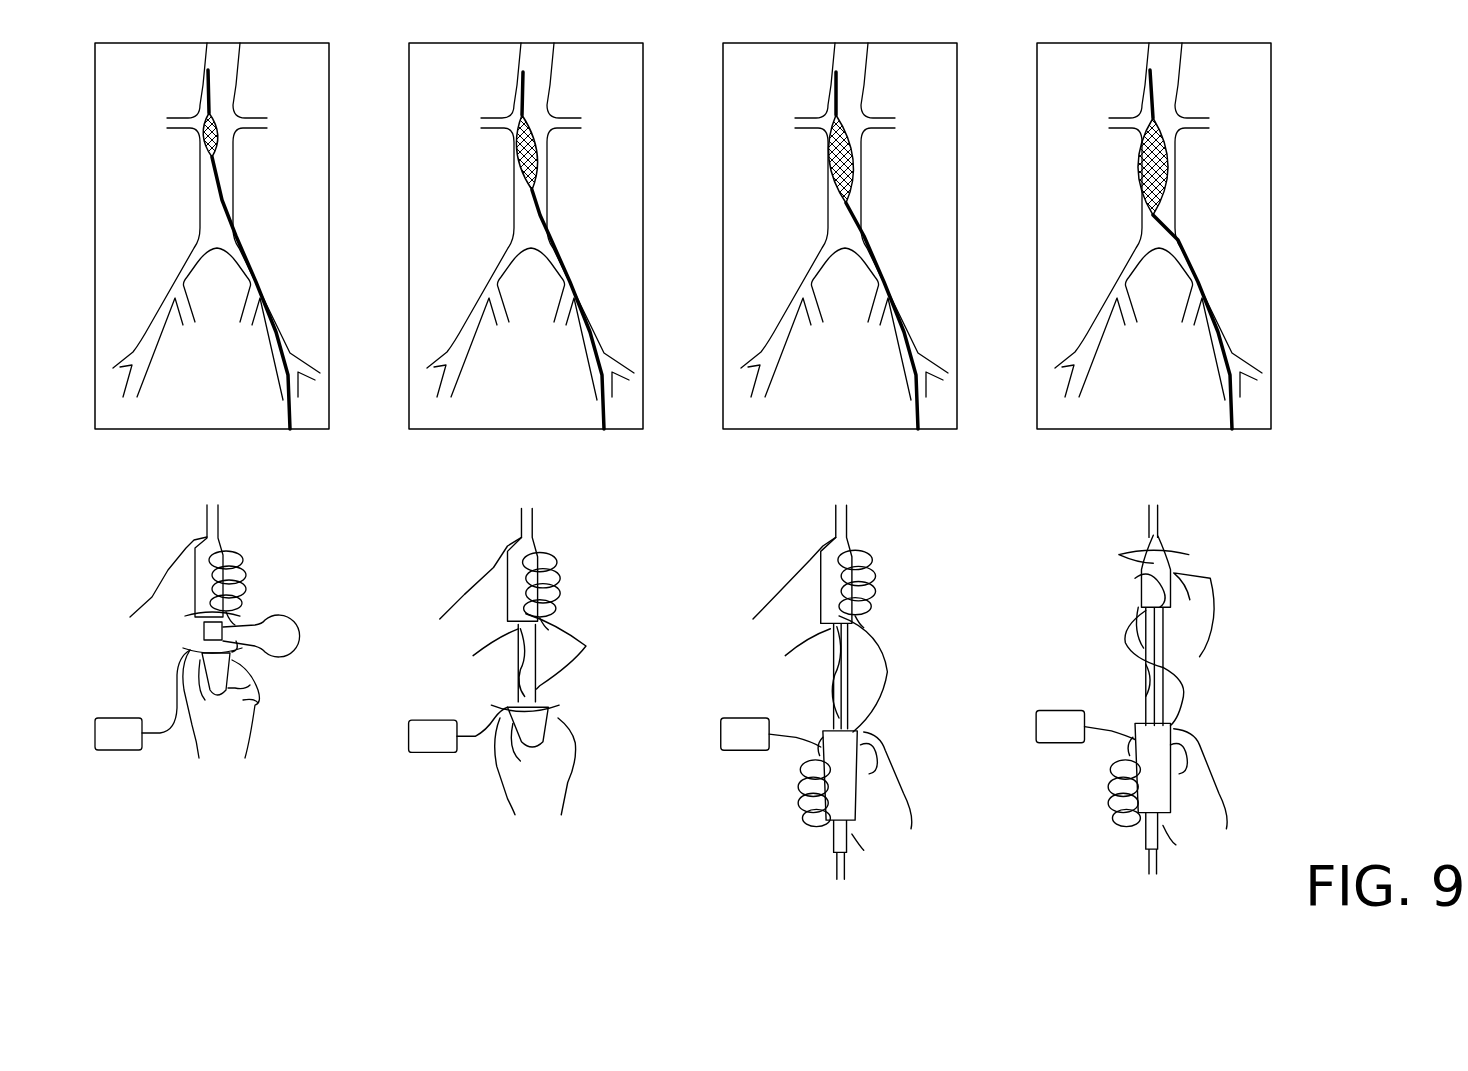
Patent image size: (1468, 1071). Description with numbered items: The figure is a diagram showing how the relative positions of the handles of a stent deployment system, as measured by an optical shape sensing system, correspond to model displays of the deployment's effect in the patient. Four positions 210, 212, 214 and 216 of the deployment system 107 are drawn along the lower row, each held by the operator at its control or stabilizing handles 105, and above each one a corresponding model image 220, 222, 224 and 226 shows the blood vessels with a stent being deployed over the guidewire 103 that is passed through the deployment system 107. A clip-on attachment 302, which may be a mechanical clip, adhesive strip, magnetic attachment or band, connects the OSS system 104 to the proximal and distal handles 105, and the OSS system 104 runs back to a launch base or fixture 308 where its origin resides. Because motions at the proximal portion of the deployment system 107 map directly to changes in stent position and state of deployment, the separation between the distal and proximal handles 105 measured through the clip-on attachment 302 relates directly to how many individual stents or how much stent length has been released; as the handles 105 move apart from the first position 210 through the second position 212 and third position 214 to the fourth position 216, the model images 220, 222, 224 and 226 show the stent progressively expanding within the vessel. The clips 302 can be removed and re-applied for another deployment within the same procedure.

The guidewire 103 is at (290, 420).
The OSS system 104 is at (302, 640).
The handles 105 is at (224, 546).
The deployment system 107 is at (248, 516).
The clip-on attachment 302 is at (202, 640).
The launch base or fixture 308 is at (118, 752).
The first position 210 is at (178, 850).
The second position 212 is at (445, 886).
The third position 214 is at (757, 884).
The fourth position 216 is at (1070, 884).
The first model image 220 is at (130, 429).
The second model image 222 is at (444, 429).
The third model image 224 is at (758, 429).
The fourth model image 226 is at (1072, 429).